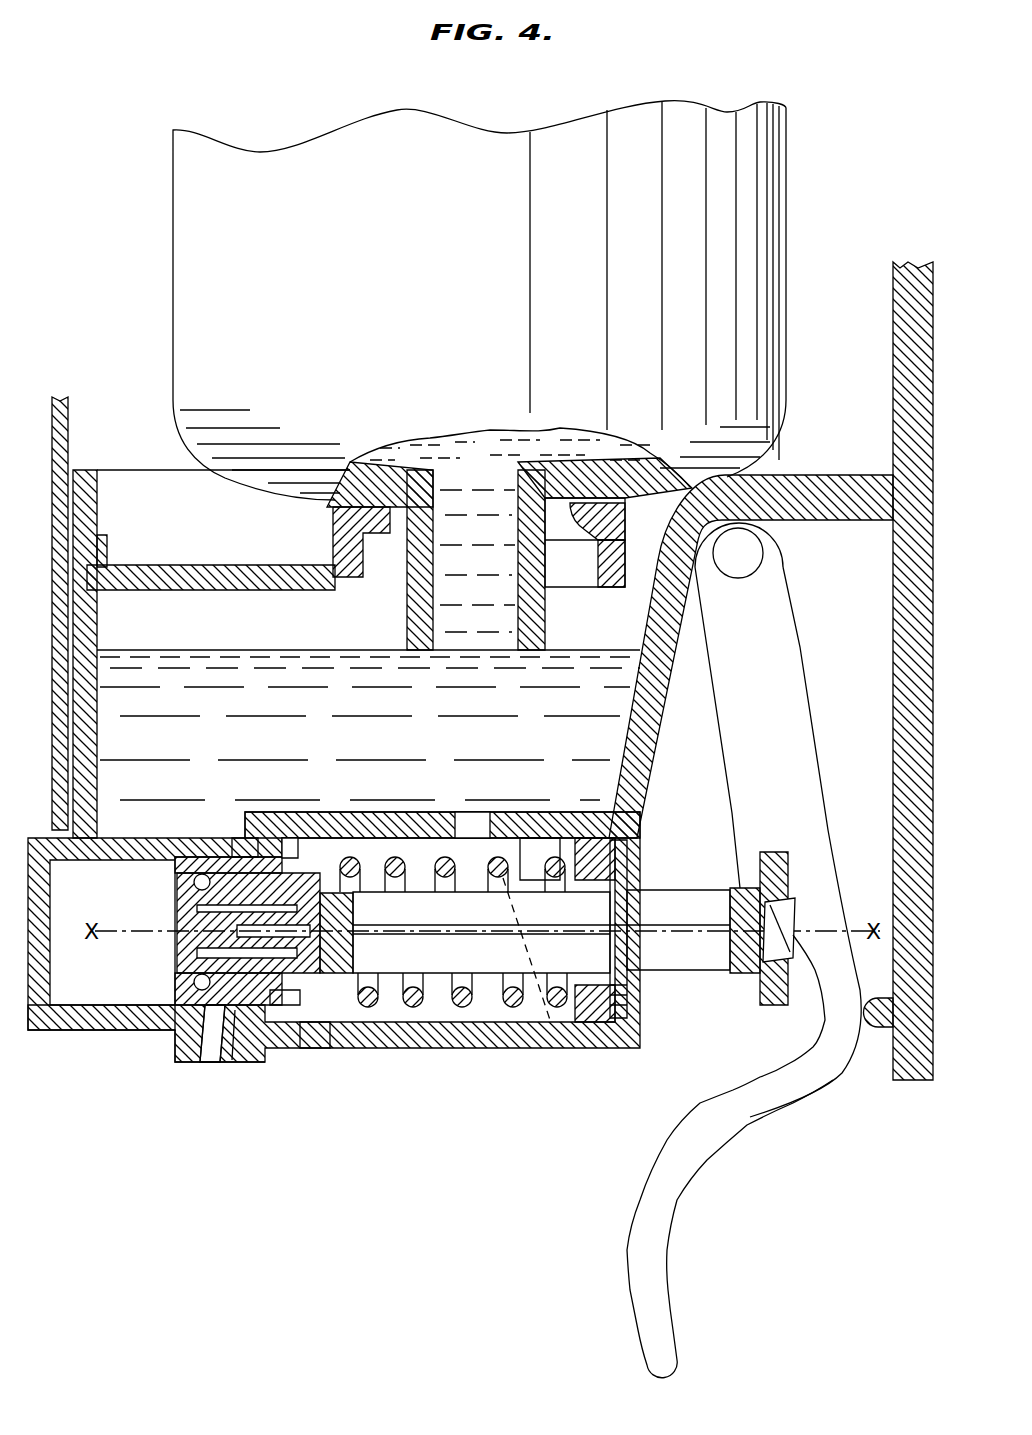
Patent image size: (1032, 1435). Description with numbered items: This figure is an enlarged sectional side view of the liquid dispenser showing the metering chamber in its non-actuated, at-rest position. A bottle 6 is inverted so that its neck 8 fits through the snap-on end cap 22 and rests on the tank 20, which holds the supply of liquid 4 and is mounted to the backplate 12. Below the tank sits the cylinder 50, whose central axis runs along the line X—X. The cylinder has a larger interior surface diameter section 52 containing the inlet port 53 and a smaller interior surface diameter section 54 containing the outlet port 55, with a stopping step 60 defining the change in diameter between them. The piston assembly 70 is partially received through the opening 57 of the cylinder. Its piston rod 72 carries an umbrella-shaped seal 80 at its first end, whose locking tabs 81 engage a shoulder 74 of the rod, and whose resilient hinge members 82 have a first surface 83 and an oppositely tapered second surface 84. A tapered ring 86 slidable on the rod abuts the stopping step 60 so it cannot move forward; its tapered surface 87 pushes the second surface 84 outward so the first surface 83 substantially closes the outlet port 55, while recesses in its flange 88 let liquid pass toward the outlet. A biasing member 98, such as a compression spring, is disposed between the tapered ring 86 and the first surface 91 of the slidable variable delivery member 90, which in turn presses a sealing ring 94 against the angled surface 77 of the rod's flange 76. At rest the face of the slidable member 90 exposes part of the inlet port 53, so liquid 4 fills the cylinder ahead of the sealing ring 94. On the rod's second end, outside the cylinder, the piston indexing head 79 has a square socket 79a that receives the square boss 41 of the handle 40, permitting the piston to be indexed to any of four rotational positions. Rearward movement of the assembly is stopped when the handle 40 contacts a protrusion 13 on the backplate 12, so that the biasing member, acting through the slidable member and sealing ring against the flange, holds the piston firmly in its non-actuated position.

The liquid 4 is at (270, 650).
The bottle 6 is at (173, 255).
The neck 8 is at (407, 628).
The backplate 12 is at (893, 340).
The protrusion 13 is at (880, 1030).
The tank 20 is at (52, 650).
The snap-on end cap 22 is at (195, 565).
The handle 40 is at (672, 1300).
The square boss 41 is at (783, 880).
The cylinder 50 is at (96, 900).
The larger interior surface diameter section 52 is at (372, 838).
The inlet port 53 is at (472, 815).
The smaller interior surface diameter section 54 is at (120, 1000).
The outlet port 55 is at (210, 1062).
The opening 57 is at (658, 870).
The stopping step 60 is at (245, 830).
The piston assembly 70 is at (478, 919).
The piston rod 72 is at (432, 935).
The shoulder 74 is at (285, 1010).
The flange 76 is at (627, 915).
The surface 77 is at (608, 909).
The piston indexing head 79 is at (762, 995).
The square socket 79a is at (790, 940).
The umbrella-shaped seal 80 is at (177, 940).
The locking tabs 81 is at (265, 857).
The hinge members 82 is at (194, 880).
The first surface 83 is at (224, 1062).
The second surface 84 is at (195, 1000).
The tapered ring 86 is at (320, 1040).
The tapered surface 87 is at (245, 1022).
The flange 88 is at (310, 812).
The slidable variable delivery member 90 is at (572, 1022).
The first surface 91 is at (520, 835).
The sealing ring 94 is at (592, 1022).
The biasing member 98 is at (515, 1005).